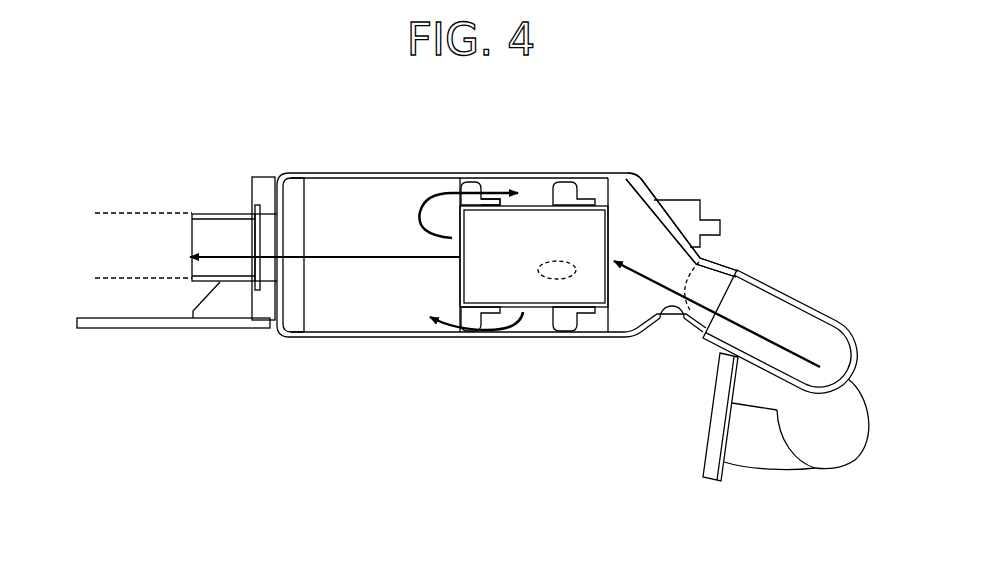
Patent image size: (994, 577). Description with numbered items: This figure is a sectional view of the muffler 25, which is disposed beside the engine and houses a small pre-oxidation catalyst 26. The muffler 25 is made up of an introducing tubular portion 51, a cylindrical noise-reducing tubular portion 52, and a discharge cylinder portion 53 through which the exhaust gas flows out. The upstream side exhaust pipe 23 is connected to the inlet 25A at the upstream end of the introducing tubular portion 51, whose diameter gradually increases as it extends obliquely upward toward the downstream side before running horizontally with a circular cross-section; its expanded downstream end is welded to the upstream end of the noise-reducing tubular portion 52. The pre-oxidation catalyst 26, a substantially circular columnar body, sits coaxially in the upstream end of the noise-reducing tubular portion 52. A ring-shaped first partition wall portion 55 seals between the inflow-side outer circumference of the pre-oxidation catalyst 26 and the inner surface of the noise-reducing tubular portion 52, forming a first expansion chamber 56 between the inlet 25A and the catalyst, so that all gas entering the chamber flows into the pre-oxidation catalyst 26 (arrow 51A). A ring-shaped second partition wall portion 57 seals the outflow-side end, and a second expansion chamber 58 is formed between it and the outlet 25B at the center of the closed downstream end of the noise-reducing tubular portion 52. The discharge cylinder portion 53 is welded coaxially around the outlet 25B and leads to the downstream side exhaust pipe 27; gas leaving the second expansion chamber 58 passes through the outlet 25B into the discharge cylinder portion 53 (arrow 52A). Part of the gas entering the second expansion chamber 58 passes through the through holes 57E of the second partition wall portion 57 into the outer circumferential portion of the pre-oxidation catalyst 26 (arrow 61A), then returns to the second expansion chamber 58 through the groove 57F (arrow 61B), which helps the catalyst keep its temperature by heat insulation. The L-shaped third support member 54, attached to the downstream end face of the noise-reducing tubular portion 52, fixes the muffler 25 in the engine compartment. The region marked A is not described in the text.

The upstream side exhaust pipe 23 is at (822, 316).
The muffler 25 is at (322, 142).
The inlet 25A is at (667, 322).
The outlet 25B is at (253, 237).
The pre-oxidation catalyst 26 is at (535, 307).
The downstream side exhaust pipe 27 is at (118, 212).
The introducing tubular portion 51 is at (643, 183).
The arrow 51A is at (700, 265).
The noise-reducing tubular portion 52 is at (356, 173).
The arrow 52A is at (345, 256).
The discharge cylinder portion 53 is at (205, 283).
The third support member 54 is at (112, 330).
The first partition wall portion 55 is at (565, 190).
The first expansion chamber 56 is at (661, 232).
The second partition wall portion 57 is at (469, 196).
The through holes 57E is at (492, 198).
The groove 57F is at (470, 334).
The second expansion chamber 58 is at (388, 304).
The arrow 61A is at (435, 196).
The arrow 61B is at (440, 326).
The region A is at (561, 283).